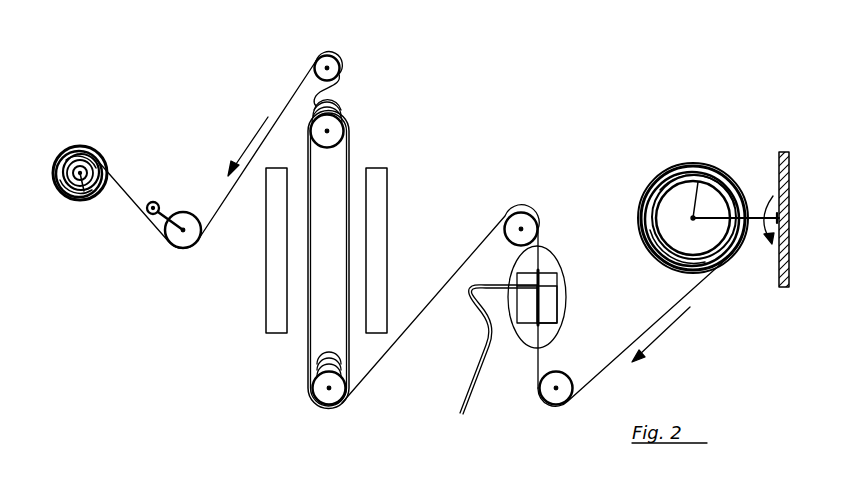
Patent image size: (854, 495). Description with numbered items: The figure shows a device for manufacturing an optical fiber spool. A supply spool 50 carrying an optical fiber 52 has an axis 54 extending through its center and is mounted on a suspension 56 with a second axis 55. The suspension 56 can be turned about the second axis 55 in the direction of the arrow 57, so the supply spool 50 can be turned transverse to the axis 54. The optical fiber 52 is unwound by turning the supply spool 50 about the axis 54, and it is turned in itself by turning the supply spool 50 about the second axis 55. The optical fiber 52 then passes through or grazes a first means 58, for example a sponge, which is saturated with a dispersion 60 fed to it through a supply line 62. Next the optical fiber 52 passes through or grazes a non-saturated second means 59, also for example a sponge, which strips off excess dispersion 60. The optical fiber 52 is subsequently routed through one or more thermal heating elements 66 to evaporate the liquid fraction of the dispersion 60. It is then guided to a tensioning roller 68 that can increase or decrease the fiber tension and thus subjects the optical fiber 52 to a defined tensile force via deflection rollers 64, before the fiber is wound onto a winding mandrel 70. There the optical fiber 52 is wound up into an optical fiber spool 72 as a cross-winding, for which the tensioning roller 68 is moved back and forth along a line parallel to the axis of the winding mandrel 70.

The supply spool 50 is at (686, 163).
The optical fiber 52 is at (470, 250).
The axis 54 is at (712, 163).
The second axis 55 is at (756, 215).
The suspension 56 is at (735, 260).
The arrow 57 is at (756, 240).
The first means 58 is at (526, 318).
The second means 59 is at (524, 278).
The dispersion 60 is at (540, 282).
The supply line 62 is at (466, 372).
The deflection rollers 64 is at (340, 63).
The thermal heating elements 66 is at (388, 198).
The tensioning roller 68 is at (153, 215).
The winding mandrel 70 is at (80, 200).
The optical fiber spool 72 is at (103, 152).